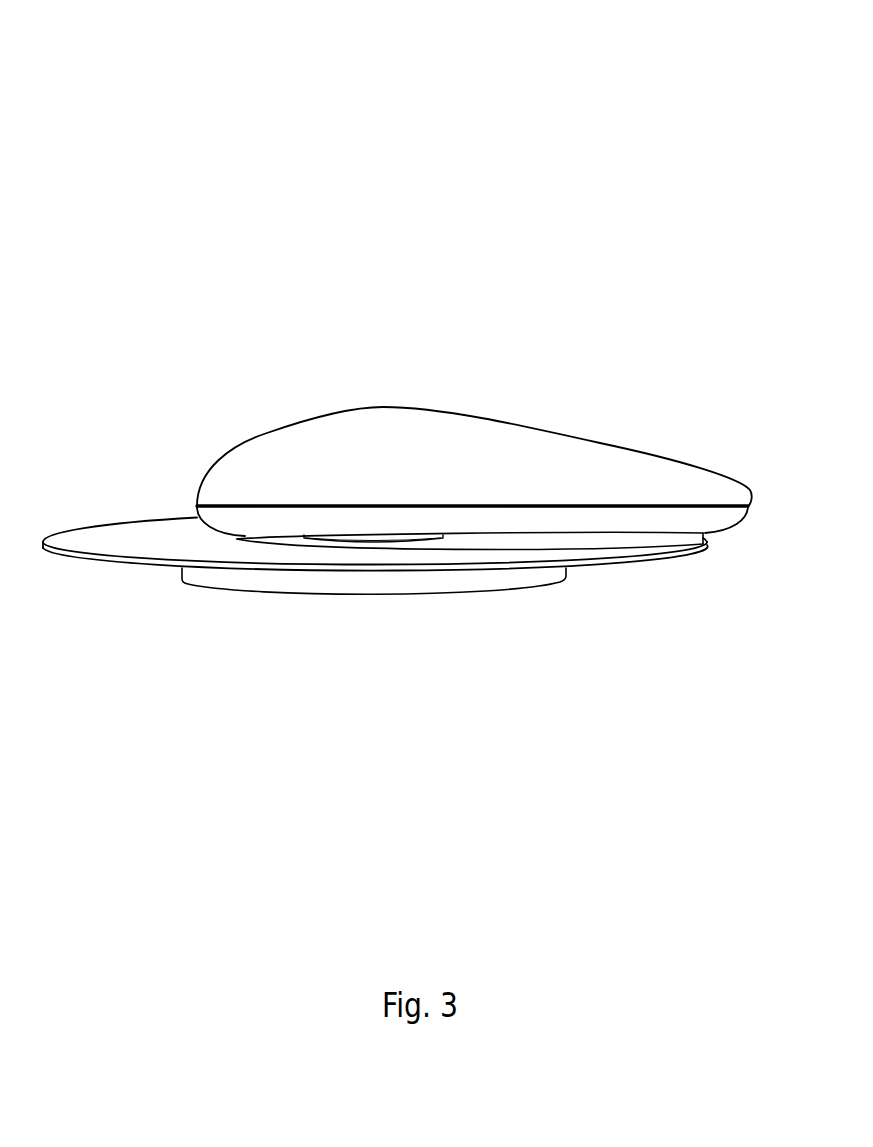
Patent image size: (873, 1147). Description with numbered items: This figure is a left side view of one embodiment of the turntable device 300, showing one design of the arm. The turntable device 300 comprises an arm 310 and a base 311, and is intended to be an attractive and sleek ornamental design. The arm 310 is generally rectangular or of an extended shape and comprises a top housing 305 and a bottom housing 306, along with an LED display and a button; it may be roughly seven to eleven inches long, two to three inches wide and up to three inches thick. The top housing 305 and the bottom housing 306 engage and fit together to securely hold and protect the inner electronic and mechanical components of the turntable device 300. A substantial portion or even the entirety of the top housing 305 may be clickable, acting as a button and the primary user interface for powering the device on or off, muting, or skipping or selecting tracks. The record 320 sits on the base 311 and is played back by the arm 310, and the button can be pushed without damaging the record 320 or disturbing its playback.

The turntable device 300 is at (255, 158).
The top housing 305 is at (288, 442).
The arm 310 is at (535, 393).
The bottom housing 306 is at (727, 518).
The record 320 is at (647, 553).
The base 311 is at (428, 582).